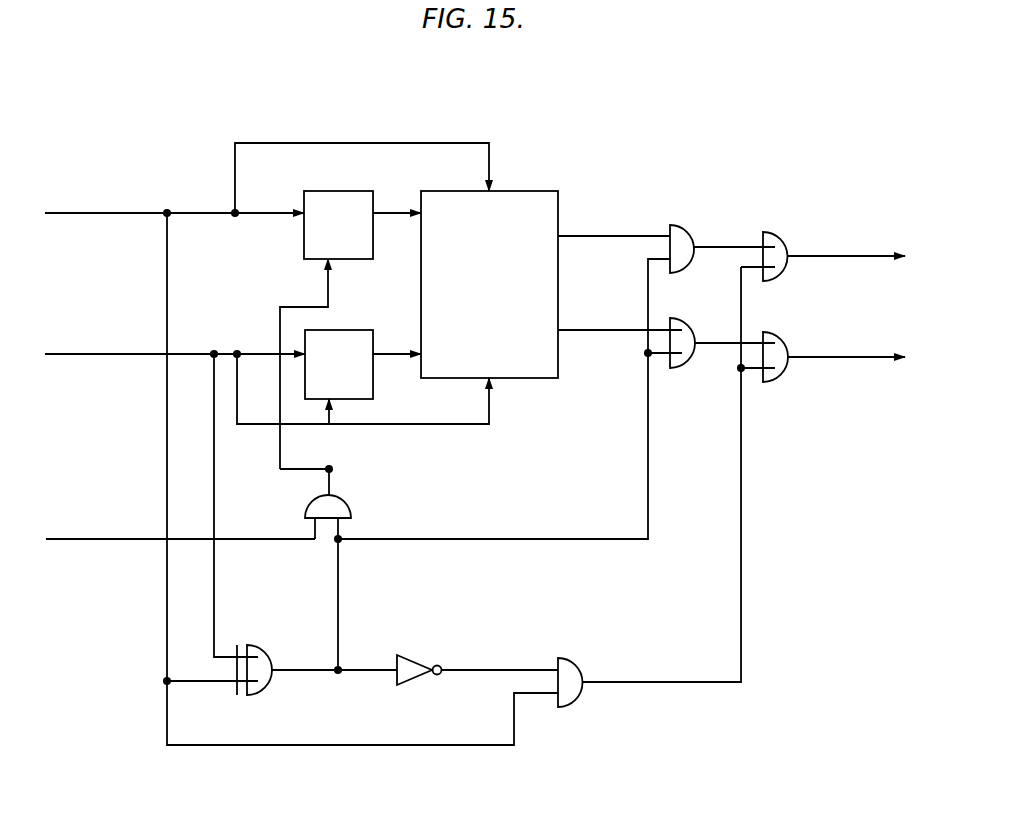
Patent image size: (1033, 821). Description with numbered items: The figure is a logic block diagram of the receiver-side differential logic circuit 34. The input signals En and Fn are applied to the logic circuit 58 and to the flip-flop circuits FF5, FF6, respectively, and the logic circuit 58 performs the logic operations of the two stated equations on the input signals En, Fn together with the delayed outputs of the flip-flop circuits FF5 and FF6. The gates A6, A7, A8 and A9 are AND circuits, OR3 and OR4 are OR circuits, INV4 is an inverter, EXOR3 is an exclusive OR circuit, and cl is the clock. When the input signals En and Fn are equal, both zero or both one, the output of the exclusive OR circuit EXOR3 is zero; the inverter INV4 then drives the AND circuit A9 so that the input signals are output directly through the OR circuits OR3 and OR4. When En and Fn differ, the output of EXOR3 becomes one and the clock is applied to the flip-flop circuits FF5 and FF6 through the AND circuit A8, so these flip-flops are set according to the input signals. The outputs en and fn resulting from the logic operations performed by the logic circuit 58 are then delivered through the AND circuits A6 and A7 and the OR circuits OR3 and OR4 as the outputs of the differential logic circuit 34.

The differential logic circuit 34 is at (566, 112).
The logic circuit 58 is at (447, 190).
The flip-flop circuit FF5 is at (336, 236).
The flip-flop circuit FF6 is at (337, 375).
The AND circuit A6 is at (692, 239).
The AND circuit A7 is at (692, 333).
The AND circuit A8 is at (342, 502).
The AND circuit A9 is at (582, 671).
The OR circuit OR3 is at (792, 246).
The OR circuit OR4 is at (792, 348).
The exclusive OR circuit EXOR3 is at (263, 686).
The inverter INV4 is at (431, 658).